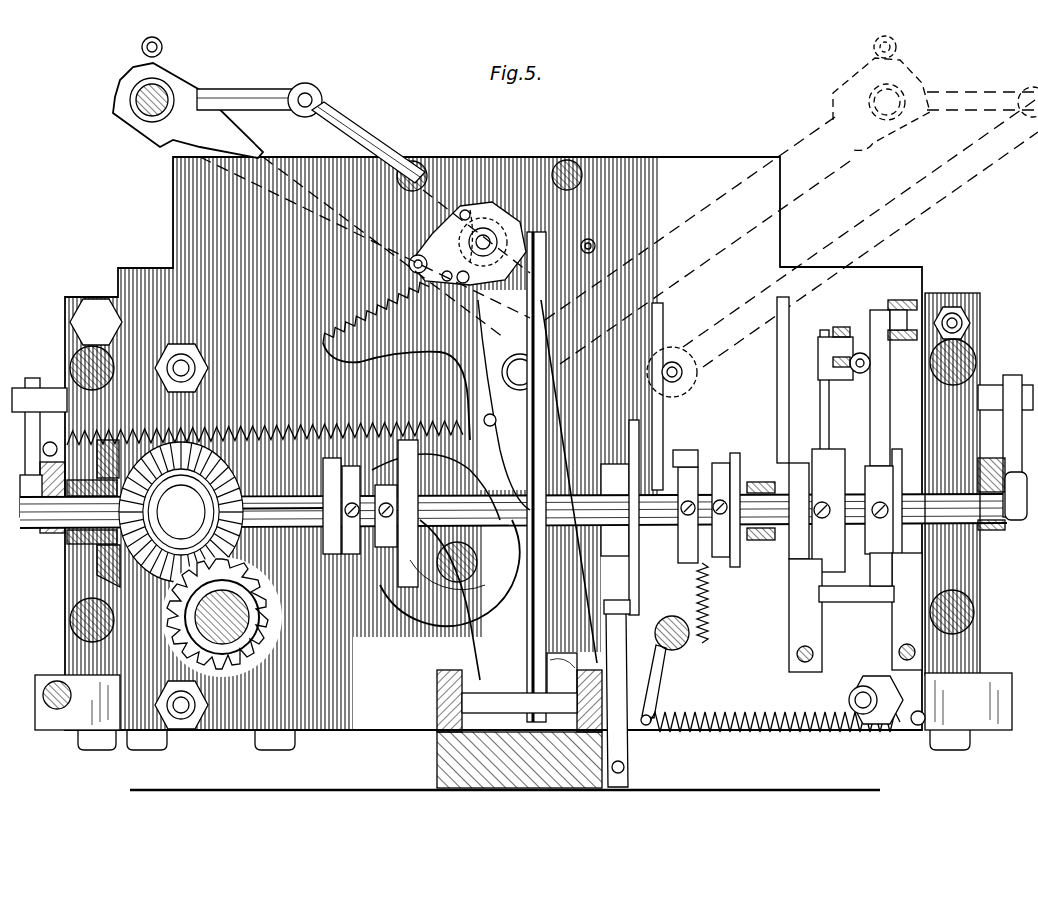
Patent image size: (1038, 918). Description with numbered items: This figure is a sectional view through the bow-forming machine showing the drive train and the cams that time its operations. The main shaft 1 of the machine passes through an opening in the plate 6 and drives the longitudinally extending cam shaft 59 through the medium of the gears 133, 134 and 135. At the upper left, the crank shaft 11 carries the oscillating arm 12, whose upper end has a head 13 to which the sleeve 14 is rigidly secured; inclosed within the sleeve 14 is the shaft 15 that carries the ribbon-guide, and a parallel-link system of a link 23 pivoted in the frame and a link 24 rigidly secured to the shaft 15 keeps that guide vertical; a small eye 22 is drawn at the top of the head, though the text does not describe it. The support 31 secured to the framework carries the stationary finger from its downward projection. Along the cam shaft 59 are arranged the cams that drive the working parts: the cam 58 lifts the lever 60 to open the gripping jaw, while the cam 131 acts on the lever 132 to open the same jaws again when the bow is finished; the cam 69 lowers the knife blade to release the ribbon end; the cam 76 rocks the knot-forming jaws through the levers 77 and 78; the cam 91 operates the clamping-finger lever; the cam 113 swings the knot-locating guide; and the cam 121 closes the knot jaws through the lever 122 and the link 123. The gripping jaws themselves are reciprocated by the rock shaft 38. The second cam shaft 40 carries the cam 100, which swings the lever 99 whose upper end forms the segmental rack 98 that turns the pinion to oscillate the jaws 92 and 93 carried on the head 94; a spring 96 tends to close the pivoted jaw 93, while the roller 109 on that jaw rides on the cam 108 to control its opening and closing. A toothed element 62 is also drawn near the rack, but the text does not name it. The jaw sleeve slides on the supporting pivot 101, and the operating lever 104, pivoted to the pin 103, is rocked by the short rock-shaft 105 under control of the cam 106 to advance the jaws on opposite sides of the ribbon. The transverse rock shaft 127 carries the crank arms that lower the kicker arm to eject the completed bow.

The main shaft 1 is at (248, 632).
The plate 6 is at (146, 272).
The crank shaft 11 is at (538, 374).
The oscillating arm 12 is at (235, 160).
The head 13 is at (112, 105).
The sleeve 14 is at (168, 88).
The shaft 15 is at (146, 116).
The eye 22 is at (161, 46).
The link 23 is at (358, 138).
The link 24 is at (262, 96).
The support 31 is at (420, 163).
The rock shaft 38 is at (672, 650).
The shaft 40 is at (462, 605).
The cam 58 is at (712, 506).
The shaft 59 is at (60, 530).
The lever 60 is at (656, 408).
The rack 62 is at (362, 490).
The cam 69 is at (335, 560).
The cam 76 is at (792, 605).
The lever 77 is at (820, 451).
The lever 78 is at (840, 326).
The cam 91 is at (380, 550).
The jaw 92 is at (412, 256).
The jaw 93 is at (415, 282).
The head 94 is at (460, 214).
The spring 96 is at (476, 160).
The segmental rack 98 is at (396, 391).
The lever 99 is at (520, 445).
The cam 100 is at (446, 590).
The supporting pivot 101 is at (662, 643).
The pin 103 is at (560, 243).
The operating lever 104 is at (548, 420).
The rock-shaft 105 is at (480, 700).
The cam 106 is at (695, 582).
The cam 108 is at (500, 226).
The roller 109 is at (480, 288).
The cam 113 is at (722, 460).
The cam 121 is at (898, 470).
The lever 122 is at (880, 398).
The link 123 is at (912, 298).
The rock shaft 127 is at (57, 712).
The cam 131 is at (794, 545).
The lever 132 is at (780, 390).
The gear 133 is at (240, 590).
The gear 134 is at (228, 492).
The gear 135 is at (100, 578).